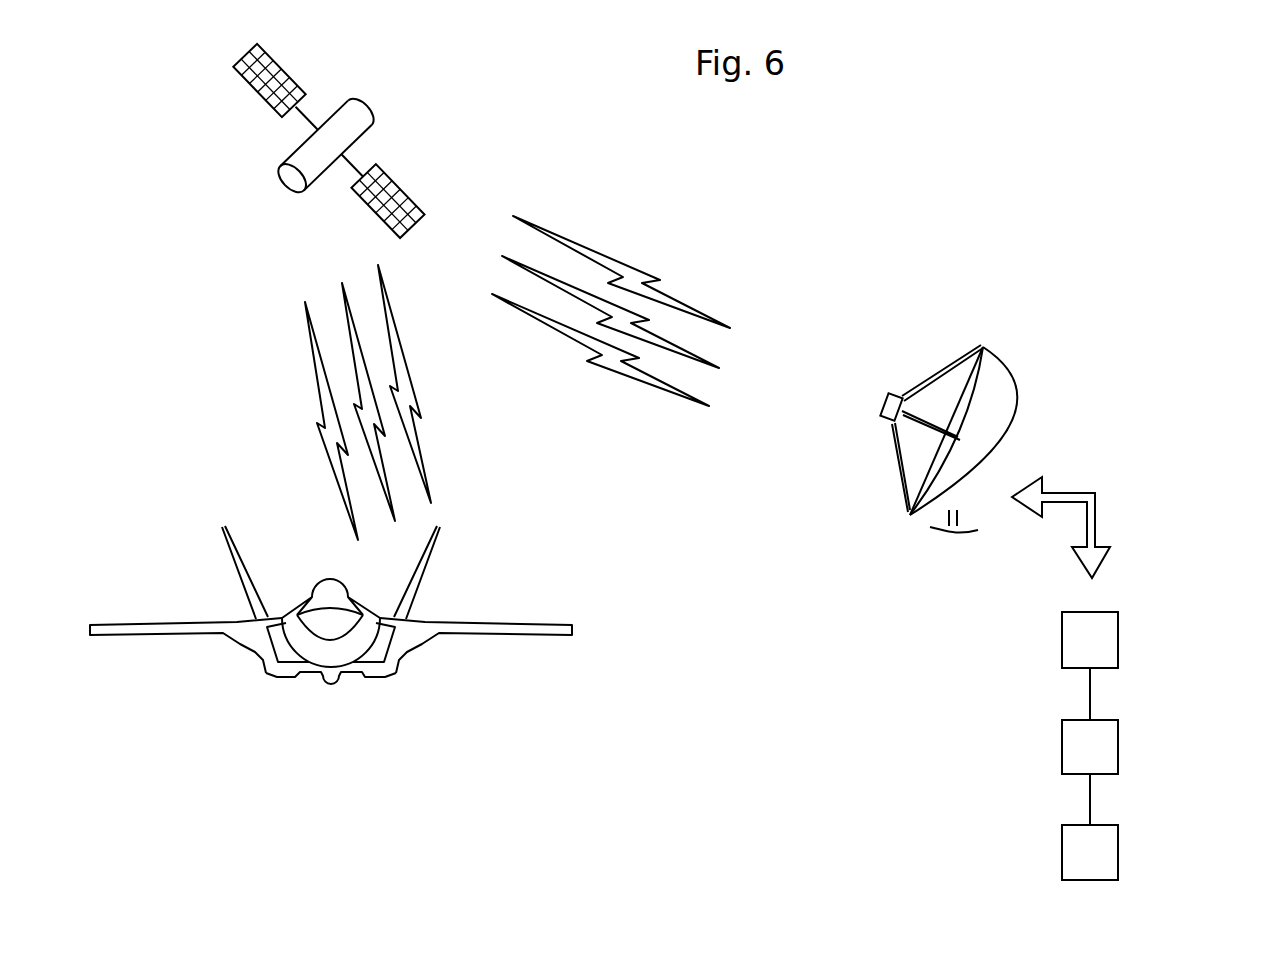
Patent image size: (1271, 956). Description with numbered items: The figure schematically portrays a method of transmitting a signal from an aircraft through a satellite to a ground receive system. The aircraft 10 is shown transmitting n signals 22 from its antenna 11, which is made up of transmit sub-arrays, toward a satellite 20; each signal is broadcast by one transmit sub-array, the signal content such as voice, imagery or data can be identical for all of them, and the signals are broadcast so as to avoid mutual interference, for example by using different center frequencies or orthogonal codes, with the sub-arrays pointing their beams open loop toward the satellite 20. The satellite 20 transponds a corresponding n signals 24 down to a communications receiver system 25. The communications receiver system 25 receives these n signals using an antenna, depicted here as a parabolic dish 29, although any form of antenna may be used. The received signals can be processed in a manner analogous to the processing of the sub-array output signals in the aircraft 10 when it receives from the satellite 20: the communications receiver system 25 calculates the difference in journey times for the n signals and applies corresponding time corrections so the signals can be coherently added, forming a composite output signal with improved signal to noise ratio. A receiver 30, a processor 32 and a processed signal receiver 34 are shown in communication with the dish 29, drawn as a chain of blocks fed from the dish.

The aircraft 10 is at (351, 605).
The antenna 11 is at (213, 598).
The satellite 20 is at (370, 112).
The signals 22_1-22n 22 is at (373, 242).
The signals 24_1-24n 24 is at (453, 290).
The communications receiver system 25 is at (1065, 612).
The parabolic dish 29 is at (1003, 367).
The receiver 30 is at (1120, 637).
The processor 32 is at (1120, 747).
The processed signal receiver 34 is at (1120, 850).